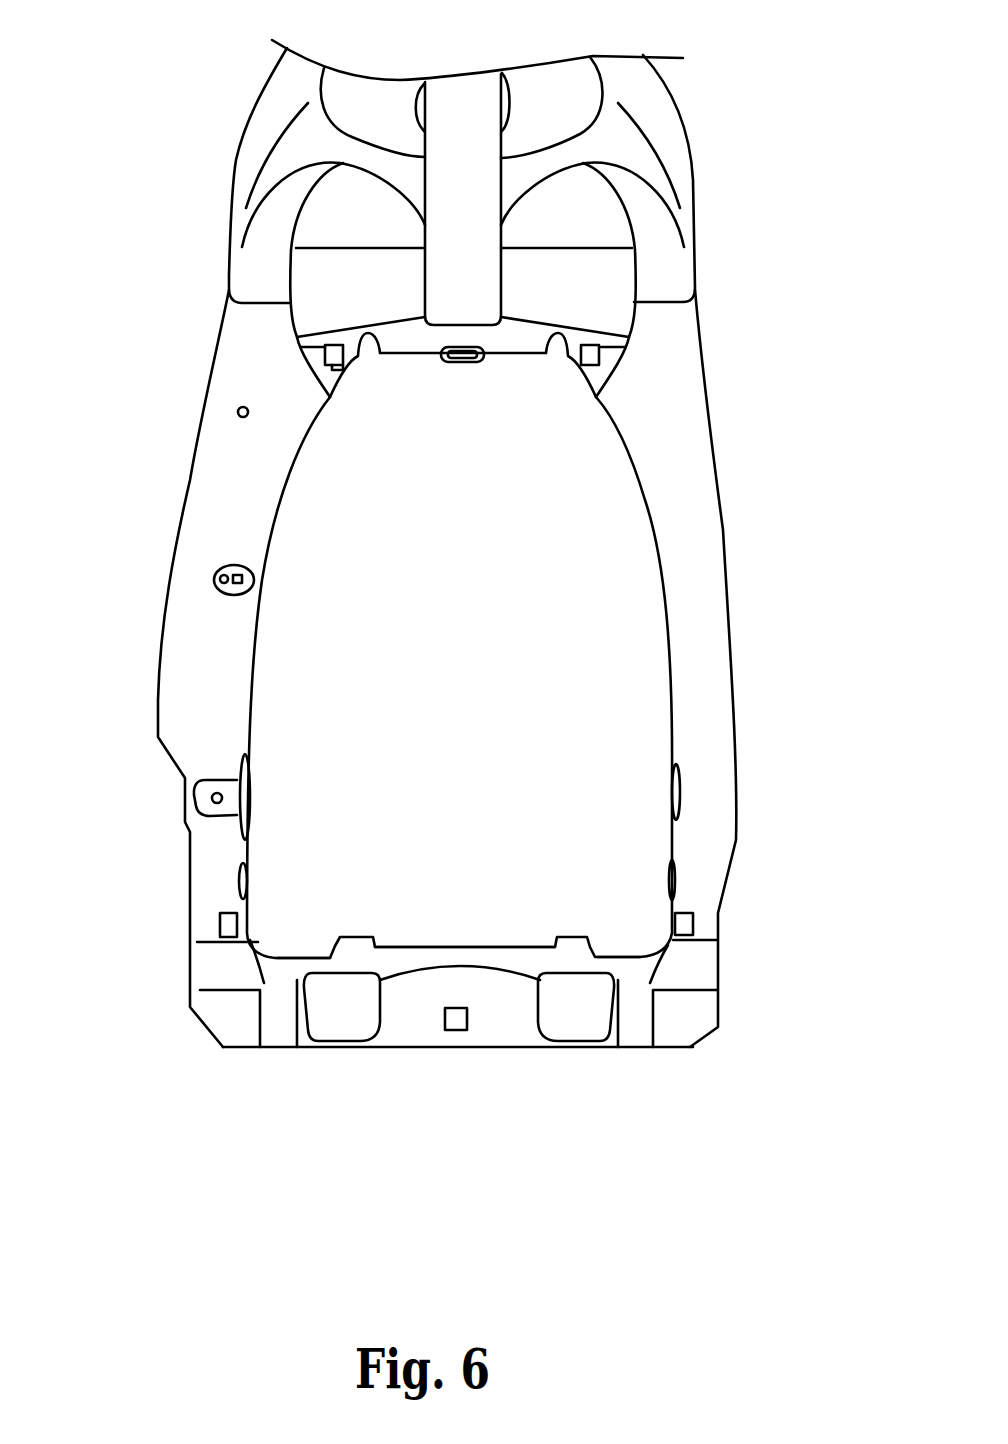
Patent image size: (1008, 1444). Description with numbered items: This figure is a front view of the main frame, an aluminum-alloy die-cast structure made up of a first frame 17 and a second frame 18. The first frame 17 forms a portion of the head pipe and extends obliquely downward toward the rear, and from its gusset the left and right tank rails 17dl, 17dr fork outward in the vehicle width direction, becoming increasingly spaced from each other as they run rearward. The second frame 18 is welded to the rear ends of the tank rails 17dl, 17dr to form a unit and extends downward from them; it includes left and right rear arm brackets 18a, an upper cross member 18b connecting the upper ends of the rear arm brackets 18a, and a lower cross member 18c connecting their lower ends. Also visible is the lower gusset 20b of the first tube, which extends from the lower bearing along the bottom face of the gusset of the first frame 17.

The first frame 17 is at (468, 267).
The left tank rail 17dl is at (229, 256).
The right tank rail 17dr is at (697, 224).
The second frame 18 is at (459, 668).
The rear arm brackets 18a is at (176, 542).
The upper cross member 18b is at (508, 356).
The lower cross member 18c is at (482, 947).
The lower gusset 20b is at (432, 268).